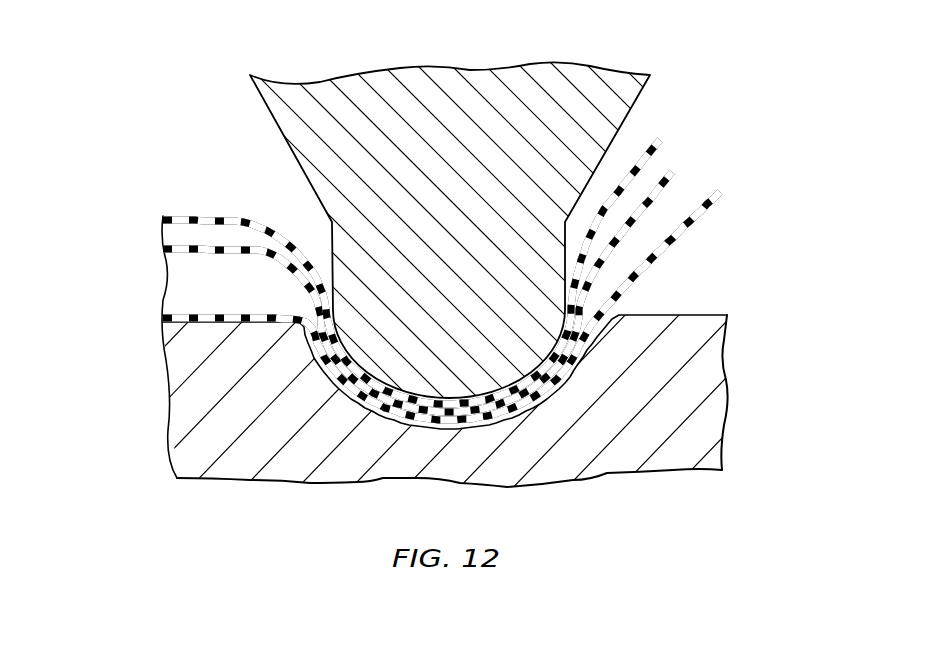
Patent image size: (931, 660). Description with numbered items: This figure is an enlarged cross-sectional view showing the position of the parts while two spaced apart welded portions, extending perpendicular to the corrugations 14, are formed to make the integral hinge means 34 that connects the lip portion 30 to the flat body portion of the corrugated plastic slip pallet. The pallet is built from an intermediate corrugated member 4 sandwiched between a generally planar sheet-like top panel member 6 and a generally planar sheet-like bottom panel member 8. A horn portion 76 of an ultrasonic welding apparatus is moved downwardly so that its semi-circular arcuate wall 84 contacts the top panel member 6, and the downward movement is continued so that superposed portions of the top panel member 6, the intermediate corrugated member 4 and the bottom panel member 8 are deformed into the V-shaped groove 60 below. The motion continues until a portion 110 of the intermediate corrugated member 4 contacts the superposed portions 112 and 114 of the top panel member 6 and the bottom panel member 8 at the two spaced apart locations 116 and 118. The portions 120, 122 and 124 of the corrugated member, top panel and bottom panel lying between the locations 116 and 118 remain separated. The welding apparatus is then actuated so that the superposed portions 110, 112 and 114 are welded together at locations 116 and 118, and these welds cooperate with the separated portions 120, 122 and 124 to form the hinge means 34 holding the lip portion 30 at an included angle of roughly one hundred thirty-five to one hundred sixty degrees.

The horn portion 76 is at (278, 102).
The top panel member 6 is at (413, 253).
The corrugations 14 is at (417, 297).
The intermediate corrugated member 4 is at (152, 283).
The lip portion 30 is at (708, 242).
The bottom panel member 8 is at (193, 330).
The hinge means 34 is at (343, 426).
The V-shaped groove 60 is at (313, 353).
The portion of the intermediate corrugated member 110 is at (345, 368).
The superposed portion of the top panel member 112 is at (337, 350).
The superposed portion of the bottom panel member 114 is at (350, 390).
The spaced apart location 116 is at (380, 348).
The spaced apart location 118 is at (504, 348).
The arcuate wall 84 is at (435, 410).
The portion of the intermediate corrugated member 120 is at (458, 415).
The portion of the top panel member 122 is at (428, 415).
The portion of the bottom panel member 124 is at (484, 425).